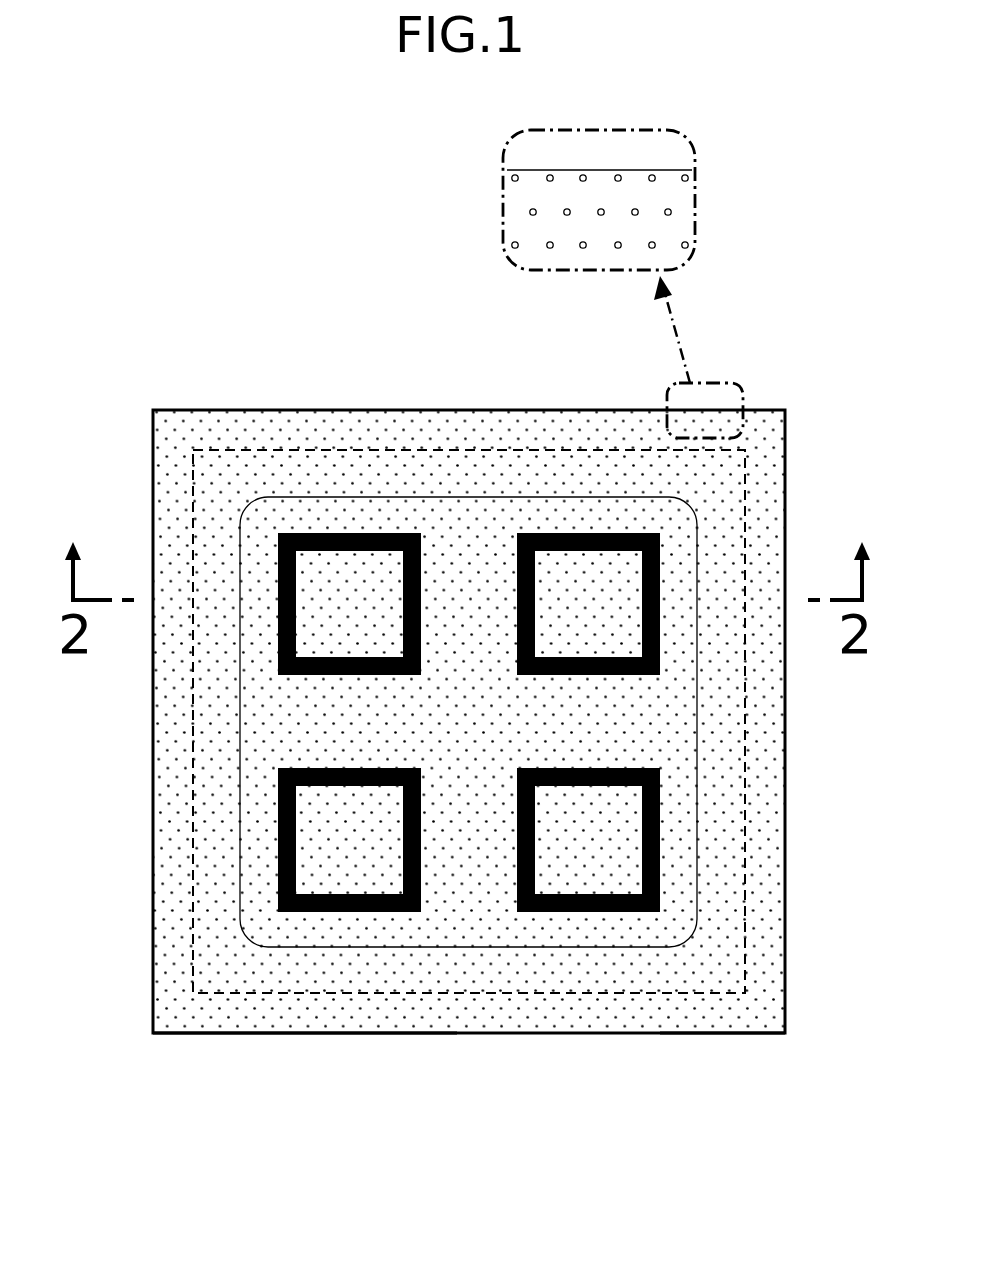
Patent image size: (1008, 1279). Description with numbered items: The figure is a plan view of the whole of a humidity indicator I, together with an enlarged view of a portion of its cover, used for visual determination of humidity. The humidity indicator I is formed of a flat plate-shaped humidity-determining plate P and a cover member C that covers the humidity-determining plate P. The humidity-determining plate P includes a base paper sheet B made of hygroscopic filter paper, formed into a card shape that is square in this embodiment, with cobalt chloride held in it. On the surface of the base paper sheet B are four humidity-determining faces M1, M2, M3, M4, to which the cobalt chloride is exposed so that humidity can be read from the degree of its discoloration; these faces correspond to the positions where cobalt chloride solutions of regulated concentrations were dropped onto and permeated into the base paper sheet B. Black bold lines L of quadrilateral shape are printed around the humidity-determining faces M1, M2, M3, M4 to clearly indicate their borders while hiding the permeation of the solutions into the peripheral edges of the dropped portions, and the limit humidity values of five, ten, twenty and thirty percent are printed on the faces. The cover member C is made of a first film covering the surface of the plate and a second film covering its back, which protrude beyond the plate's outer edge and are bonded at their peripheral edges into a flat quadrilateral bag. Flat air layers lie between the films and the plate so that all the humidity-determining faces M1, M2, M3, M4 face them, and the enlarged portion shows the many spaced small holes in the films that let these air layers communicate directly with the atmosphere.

The humidity indicator I is at (330, 400).
The humidity-determining plate P is at (245, 440).
The base paper sheet B is at (454, 649).
The humidity-determining face M1 is at (322, 578).
The humidity-determining face M2 is at (620, 570).
The humidity-determining face M3 is at (317, 867).
The humidity-determining face M4 is at (573, 873).
The black bold lines L is at (474, 771).
The cover member C is at (710, 1040).